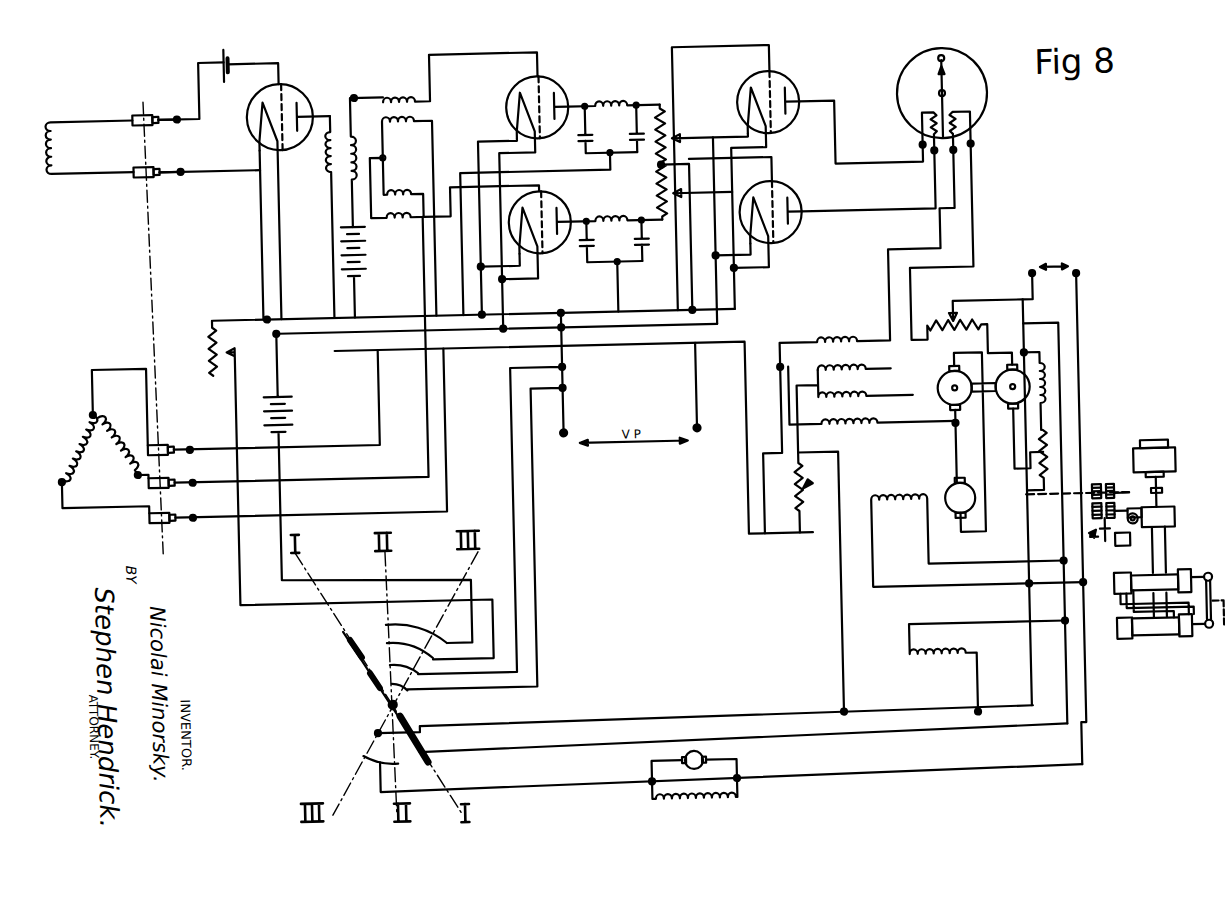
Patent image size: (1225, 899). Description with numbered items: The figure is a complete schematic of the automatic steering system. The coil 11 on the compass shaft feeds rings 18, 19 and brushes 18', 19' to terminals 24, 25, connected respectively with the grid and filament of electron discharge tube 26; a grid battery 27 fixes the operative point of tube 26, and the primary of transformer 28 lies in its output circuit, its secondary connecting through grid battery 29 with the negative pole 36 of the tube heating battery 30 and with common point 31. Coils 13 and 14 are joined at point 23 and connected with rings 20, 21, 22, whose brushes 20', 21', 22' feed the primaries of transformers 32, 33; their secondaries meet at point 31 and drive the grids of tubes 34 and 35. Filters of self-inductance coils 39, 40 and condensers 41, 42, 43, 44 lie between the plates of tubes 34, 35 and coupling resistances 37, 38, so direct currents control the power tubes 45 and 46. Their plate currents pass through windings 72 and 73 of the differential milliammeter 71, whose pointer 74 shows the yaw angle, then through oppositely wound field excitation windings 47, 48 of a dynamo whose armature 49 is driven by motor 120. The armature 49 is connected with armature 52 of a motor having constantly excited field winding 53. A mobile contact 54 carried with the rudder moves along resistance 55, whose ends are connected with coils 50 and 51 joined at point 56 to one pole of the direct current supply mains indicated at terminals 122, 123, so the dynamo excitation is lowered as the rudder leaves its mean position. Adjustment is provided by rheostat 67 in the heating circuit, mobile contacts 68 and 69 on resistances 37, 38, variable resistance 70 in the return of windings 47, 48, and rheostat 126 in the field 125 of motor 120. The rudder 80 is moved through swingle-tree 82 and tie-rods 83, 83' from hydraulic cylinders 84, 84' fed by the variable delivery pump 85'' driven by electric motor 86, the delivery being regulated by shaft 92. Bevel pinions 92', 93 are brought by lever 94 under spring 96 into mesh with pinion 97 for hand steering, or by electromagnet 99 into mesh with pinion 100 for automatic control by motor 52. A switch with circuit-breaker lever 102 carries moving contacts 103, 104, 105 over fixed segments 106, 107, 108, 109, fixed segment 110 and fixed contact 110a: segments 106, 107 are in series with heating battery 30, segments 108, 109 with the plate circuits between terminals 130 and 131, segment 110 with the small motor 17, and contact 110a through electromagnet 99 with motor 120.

The coil 11 is at (70, 142).
The coil 13 is at (82, 405).
The coil 14 is at (110, 442).
The small motor 17 is at (648, 800).
The ring 18 is at (138, 108).
The brush 18' is at (167, 132).
The ring 19 is at (140, 164).
The brush 19' is at (172, 187).
The ring 20 is at (162, 436).
The brush 20' is at (276, 401).
The ring 21 is at (167, 474).
The brush 21' is at (299, 361).
The ring 22 is at (152, 529).
The brush 22' is at (310, 447).
The point 23 is at (97, 402).
The terminal 24 is at (185, 108).
The terminal 25 is at (189, 160).
The electron discharge tube 26 is at (308, 86).
The grid battery 27 is at (244, 52).
The transformer 28 is at (332, 163).
The grid battery 29 is at (372, 267).
The tube heating battery 30 is at (290, 407).
The common point 31 is at (367, 152).
The transformer 32 is at (414, 94).
The transformer 33 is at (392, 220).
The tube 34 is at (567, 92).
The tube 35 is at (566, 206).
The negative pole 36 is at (266, 311).
The coupling resistance 37 is at (662, 166).
The coupling resistance 38 is at (665, 185).
The self-inductance coil 39 is at (606, 104).
The self-inductance coil 40 is at (636, 218).
The condenser 41 is at (587, 143).
The condenser 42 is at (639, 139).
The condenser 43 is at (588, 254).
The condenser 44 is at (639, 252).
The power tube 45 is at (800, 84).
The power tube 46 is at (808, 206).
The field excitation winding 47 is at (854, 372).
The field excitation winding 48 is at (857, 400).
The armature 49 is at (950, 388).
The field excitation winding 50 is at (854, 343).
The field excitation winding 51 is at (848, 435).
The motor armature 52 is at (955, 494).
The field excitation winding 53 is at (911, 502).
The mobile contact 54 is at (965, 322).
The resistance 55 is at (953, 328).
The point 56 is at (780, 369).
The rheostat 67 is at (210, 350).
The mobile contact 68 is at (689, 146).
The mobile contact 69 is at (692, 202).
The variable resistance 70 is at (819, 582).
The differential milliammeter 71 is at (992, 126).
The magnetizing coil 72 is at (936, 116).
The magnetizing coil 73 is at (963, 117).
The pointer 74 is at (954, 91).
The rudder 80 is at (1205, 645).
The swingle-tree 82 is at (1214, 589).
The tie-rod 83 is at (1197, 560).
The tie-rod 83' is at (1188, 643).
The hydraulic cylinder 84 is at (1154, 594).
The hydraulic cylinder 84' is at (1155, 626).
The variable delivery hydraulic pump 85'' is at (1116, 498).
The electric motor 86 is at (1167, 461).
The shaft 92 is at (1151, 561).
The bevel pinion 92' is at (1076, 514).
The bevel pinion 93 is at (1123, 522).
The lever 94 is at (1098, 547).
The spring 96 is at (1092, 556).
The pinion 97 is at (1110, 497).
The electro-magnet 99 is at (913, 666).
The pinion 100 is at (1094, 495).
The circuit-breaker lever 102 is at (355, 657).
The moving contact 103 is at (344, 639).
The moving contact 104 is at (362, 675).
The moving contact 105 is at (404, 726).
The segment 106 is at (412, 621).
The segment 107 is at (382, 637).
The segment 108 is at (415, 671).
The segment 109 is at (420, 694).
The fixed segment 110 is at (367, 768).
The fixed contact 110a is at (370, 730).
The motor 120 is at (1012, 373).
The terminal 122 is at (1034, 280).
The terminal 123 is at (1079, 280).
The field 125 is at (1049, 400).
The rheostat 126 is at (1050, 455).
The terminal 130 is at (566, 430).
The terminal 131 is at (699, 428).